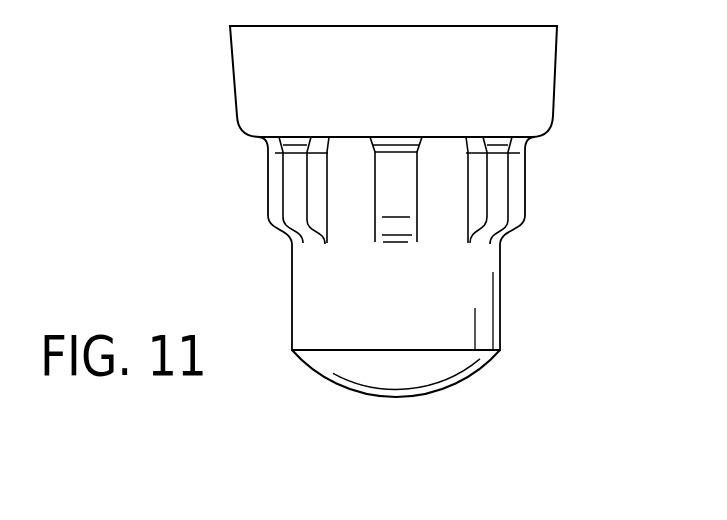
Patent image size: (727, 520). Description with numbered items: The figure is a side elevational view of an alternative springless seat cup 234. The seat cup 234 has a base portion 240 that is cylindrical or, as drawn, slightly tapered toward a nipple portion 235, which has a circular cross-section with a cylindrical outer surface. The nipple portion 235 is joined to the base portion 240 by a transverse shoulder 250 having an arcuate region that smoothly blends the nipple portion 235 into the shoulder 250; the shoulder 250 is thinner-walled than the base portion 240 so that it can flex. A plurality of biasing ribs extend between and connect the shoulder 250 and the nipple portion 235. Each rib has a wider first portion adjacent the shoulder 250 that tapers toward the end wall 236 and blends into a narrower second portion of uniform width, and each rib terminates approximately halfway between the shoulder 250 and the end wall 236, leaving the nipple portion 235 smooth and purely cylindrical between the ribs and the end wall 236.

The base portion 240 is at (233, 84).
The shoulder 250 is at (252, 140).
The springless seat cup 234 is at (552, 185).
The nipple portion 235 is at (290, 289).
The end wall 236 is at (389, 404).